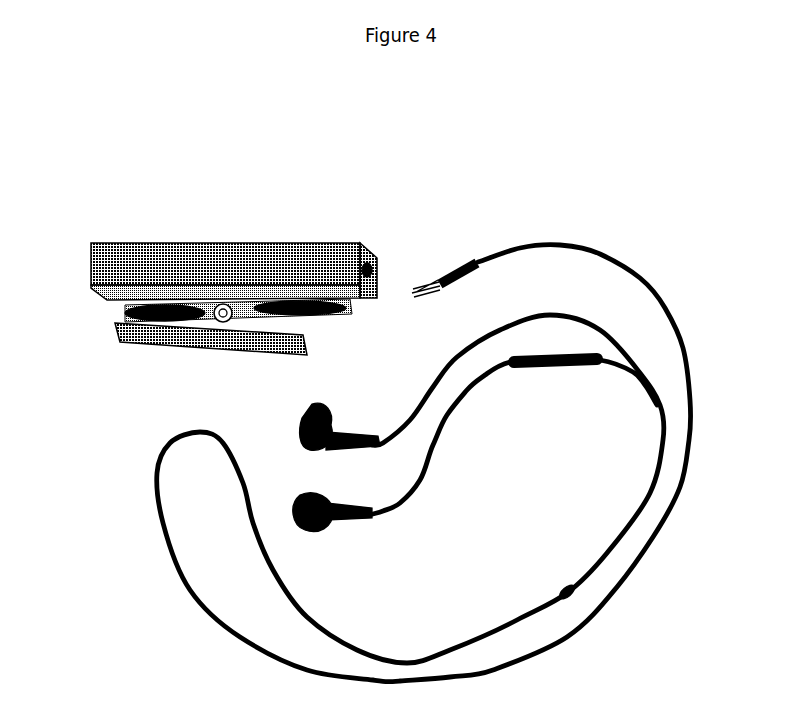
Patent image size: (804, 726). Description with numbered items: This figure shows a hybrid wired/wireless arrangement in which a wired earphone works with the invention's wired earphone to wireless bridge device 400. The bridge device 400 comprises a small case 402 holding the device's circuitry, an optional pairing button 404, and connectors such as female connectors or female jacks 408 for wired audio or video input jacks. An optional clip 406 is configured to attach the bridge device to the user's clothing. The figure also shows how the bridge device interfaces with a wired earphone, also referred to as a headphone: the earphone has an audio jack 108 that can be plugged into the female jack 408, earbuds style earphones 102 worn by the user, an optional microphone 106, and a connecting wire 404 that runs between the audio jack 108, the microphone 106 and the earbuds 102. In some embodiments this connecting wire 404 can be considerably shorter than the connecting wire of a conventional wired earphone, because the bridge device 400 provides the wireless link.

The wired earphone to wireless bridge device 400 is at (68, 243).
The small case 402 is at (140, 257).
The pairing button 404 is at (227, 260).
The clip 406 is at (193, 350).
The connectors for wired audio or video input jacks 408 is at (380, 268).
The audio jack 108 is at (445, 262).
The microphone 106 is at (553, 380).
The earbuds style earphones 102 is at (293, 537).